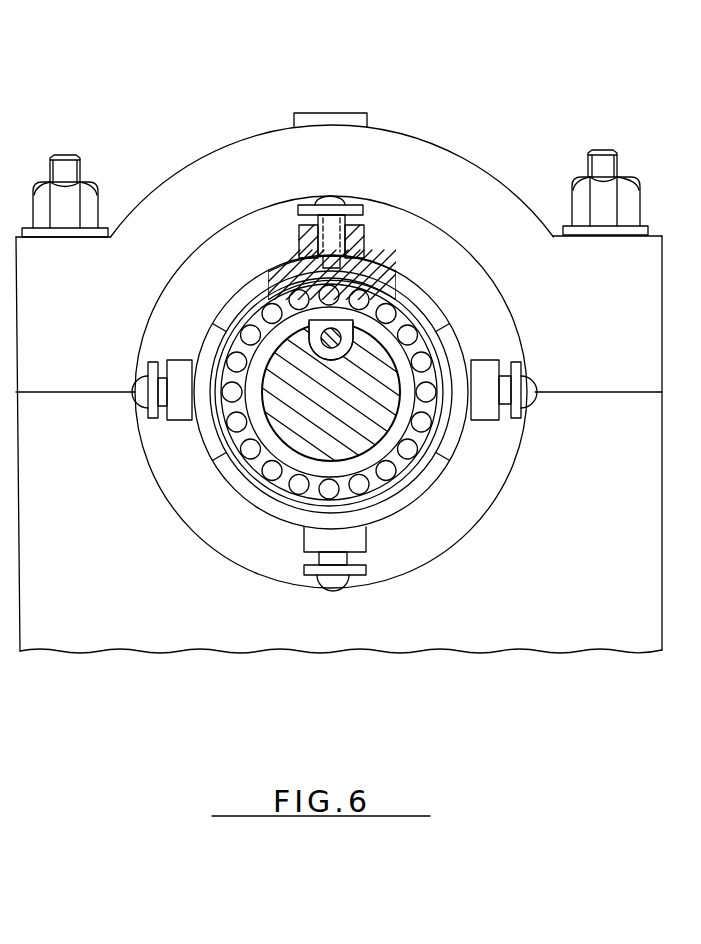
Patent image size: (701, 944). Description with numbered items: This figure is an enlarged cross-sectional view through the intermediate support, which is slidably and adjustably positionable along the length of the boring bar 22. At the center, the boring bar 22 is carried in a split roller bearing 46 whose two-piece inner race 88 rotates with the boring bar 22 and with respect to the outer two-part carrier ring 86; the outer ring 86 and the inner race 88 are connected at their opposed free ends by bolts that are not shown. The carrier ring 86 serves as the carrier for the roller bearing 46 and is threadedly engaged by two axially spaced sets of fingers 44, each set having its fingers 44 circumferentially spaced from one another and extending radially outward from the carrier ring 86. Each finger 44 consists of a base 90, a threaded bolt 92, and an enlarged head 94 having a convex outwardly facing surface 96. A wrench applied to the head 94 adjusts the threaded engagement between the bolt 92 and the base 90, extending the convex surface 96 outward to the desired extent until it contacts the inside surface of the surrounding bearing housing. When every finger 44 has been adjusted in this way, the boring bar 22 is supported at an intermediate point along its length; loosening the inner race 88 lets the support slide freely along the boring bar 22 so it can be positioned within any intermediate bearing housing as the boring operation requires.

The boring bar 22 is at (298, 440).
The fingers 44 is at (366, 210).
The split roller bearing 46 is at (440, 357).
The two-part carrier ring 86 is at (440, 322).
The two-piece inner race 88 is at (390, 440).
The base 90 is at (297, 238).
The threaded bolt 92 is at (348, 221).
The enlarged head 94 is at (298, 205).
The convex outwardly facing surface 96 is at (335, 197).